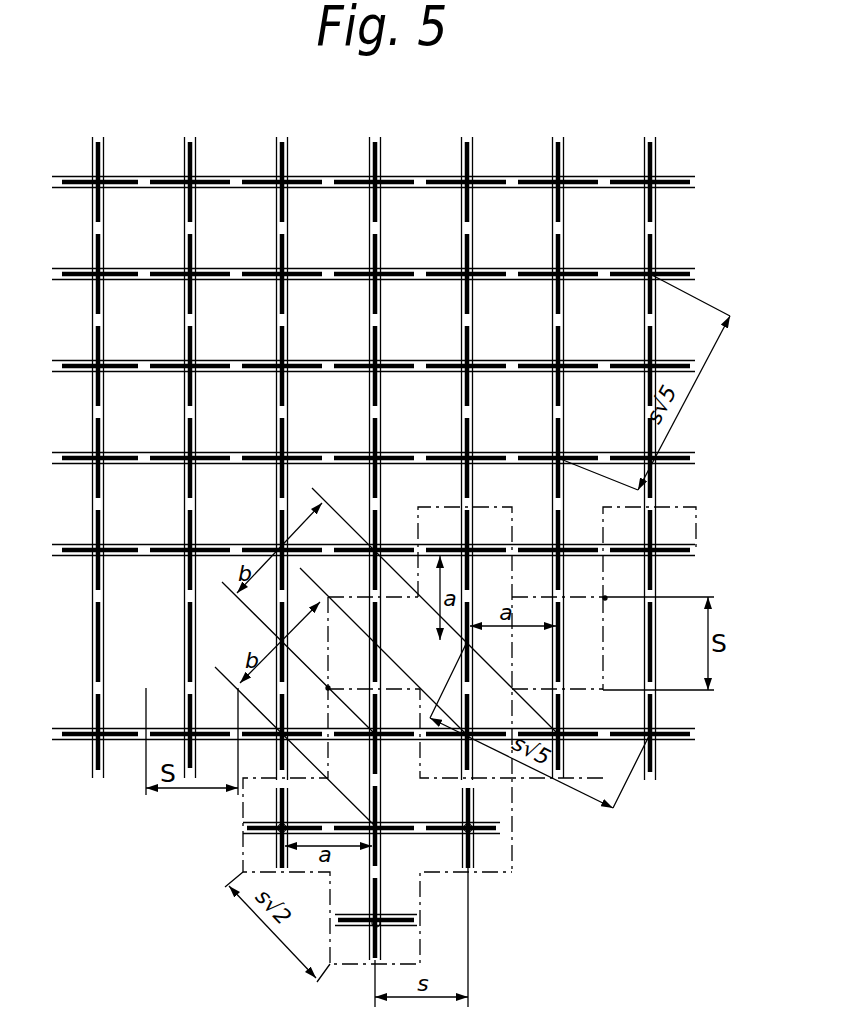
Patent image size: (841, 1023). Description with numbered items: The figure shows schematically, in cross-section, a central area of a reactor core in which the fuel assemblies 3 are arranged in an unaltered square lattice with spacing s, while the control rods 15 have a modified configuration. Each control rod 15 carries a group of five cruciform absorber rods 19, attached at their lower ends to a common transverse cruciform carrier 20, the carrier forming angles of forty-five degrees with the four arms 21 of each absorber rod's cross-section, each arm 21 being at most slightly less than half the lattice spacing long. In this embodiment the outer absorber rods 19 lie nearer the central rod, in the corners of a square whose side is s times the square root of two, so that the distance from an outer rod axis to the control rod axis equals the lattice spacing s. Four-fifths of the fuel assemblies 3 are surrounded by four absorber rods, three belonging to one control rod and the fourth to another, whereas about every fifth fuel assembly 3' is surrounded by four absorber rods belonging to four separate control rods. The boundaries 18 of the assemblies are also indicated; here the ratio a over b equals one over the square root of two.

The fuel assembly 3 is at (387, 442).
The fuel assembly surrounded by four separate control rods 3' is at (414, 534).
The control rod 15 is at (386, 818).
The strip 18 is at (97, 137).
The absorber rod 19 is at (255, 823).
The cruciform carrier 20 is at (392, 836).
The arm 21 is at (357, 917).